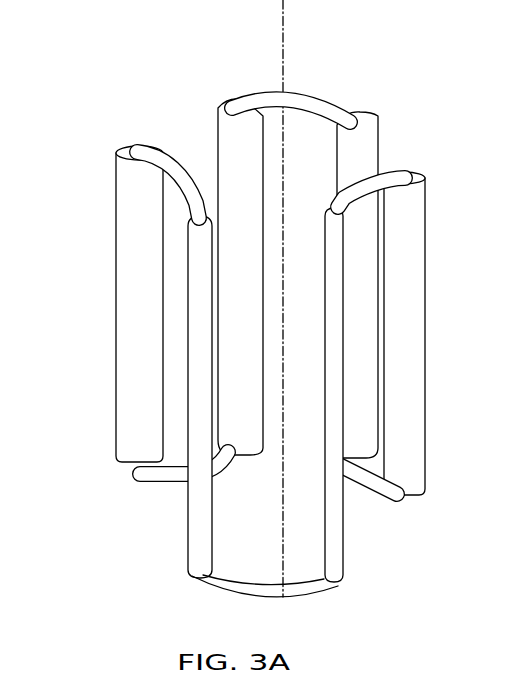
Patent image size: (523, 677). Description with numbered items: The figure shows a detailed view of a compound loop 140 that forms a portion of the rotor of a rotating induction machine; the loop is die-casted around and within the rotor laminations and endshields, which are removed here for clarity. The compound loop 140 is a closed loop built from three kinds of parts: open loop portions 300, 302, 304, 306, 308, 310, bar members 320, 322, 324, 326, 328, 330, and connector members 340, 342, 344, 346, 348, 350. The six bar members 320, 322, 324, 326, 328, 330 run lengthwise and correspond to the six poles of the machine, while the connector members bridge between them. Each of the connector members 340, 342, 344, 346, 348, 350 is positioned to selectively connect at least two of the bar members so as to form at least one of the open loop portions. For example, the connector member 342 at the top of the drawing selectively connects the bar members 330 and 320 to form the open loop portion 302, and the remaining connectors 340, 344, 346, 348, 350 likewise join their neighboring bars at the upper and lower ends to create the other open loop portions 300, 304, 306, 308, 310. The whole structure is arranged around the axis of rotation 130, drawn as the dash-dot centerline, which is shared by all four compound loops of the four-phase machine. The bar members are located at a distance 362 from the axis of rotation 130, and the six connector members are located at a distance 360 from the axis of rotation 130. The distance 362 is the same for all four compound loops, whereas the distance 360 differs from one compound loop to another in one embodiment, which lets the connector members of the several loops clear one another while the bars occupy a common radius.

The axis of rotation 130 is at (285, 43).
The compound loop 140 is at (172, 57).
The open loop portion 300 is at (168, 116).
The open loop portion 302 is at (278, 125).
The open loop portion 304 is at (370, 163).
The open loop portion 306 is at (169, 481).
The open loop portion 308 is at (264, 545).
The open loop portion 310 is at (354, 511).
The bar member 320 is at (218, 110).
The bar member 322 is at (116, 352).
The bar member 324 is at (187, 560).
The bar member 326 is at (343, 555).
The bar member 328 is at (426, 366).
The bar member 330 is at (378, 121).
The connector member 340 is at (128, 212).
The connector member 342 is at (313, 96).
The connector member 344 is at (405, 176).
The connector member 346 is at (378, 488).
The connector member 348 is at (299, 594).
The connector member 350 is at (182, 476).
The distance 360 is at (280, 162).
The distance 362 is at (280, 162).